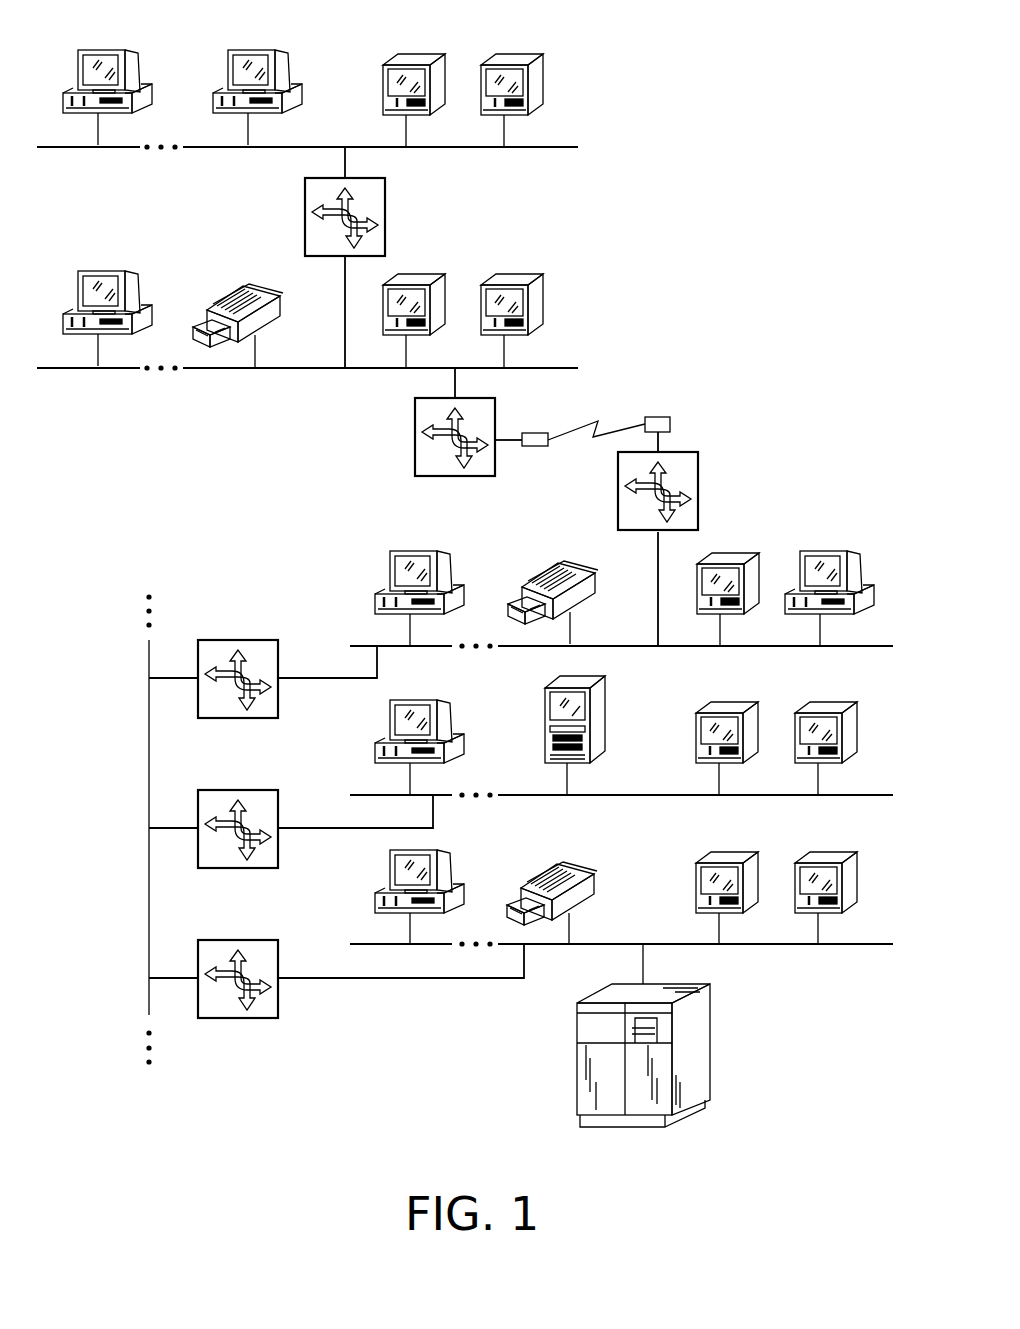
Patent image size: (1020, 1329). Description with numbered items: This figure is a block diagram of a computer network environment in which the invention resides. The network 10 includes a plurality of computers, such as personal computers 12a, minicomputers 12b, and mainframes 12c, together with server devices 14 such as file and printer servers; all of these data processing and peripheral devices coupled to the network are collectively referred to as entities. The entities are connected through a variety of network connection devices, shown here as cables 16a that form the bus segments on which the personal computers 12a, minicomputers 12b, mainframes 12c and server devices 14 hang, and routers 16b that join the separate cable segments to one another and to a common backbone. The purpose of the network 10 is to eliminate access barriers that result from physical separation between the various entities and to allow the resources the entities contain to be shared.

The network 10 is at (85, 810).
The personal computers 12a is at (383, 74).
The minicomputers 12b is at (865, 582).
The mainframes 12c is at (578, 1073).
The server devices 14 is at (76, 92).
The cables 16a is at (218, 149).
The routers 16b is at (694, 452).